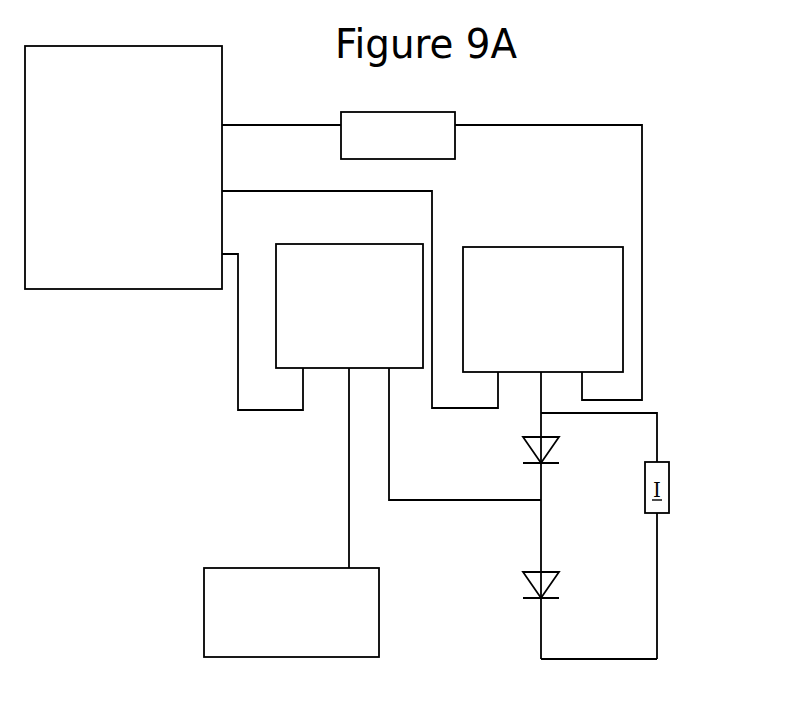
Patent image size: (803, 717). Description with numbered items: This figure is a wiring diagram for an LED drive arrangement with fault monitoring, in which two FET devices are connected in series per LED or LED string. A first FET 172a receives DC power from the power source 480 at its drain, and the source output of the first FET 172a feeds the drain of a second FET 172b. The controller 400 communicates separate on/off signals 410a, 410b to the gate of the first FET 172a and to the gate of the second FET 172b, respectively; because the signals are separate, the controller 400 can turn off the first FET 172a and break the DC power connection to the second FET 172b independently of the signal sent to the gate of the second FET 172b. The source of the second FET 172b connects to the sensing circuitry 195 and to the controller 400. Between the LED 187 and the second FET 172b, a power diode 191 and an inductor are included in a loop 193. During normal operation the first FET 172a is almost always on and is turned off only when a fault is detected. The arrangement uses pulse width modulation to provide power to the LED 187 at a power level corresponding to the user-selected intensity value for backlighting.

The controller 400 is at (139, 125).
The sensing circuitry 195 is at (414, 148).
The on/off signal 410b is at (300, 190).
The on/off signal 410a is at (238, 325).
The first FET 172a is at (326, 280).
The second FET 172b is at (519, 283).
The power source 480 is at (309, 611).
The power diode 191 is at (558, 440).
The LED 187 is at (558, 574).
The loop 193 is at (657, 641).